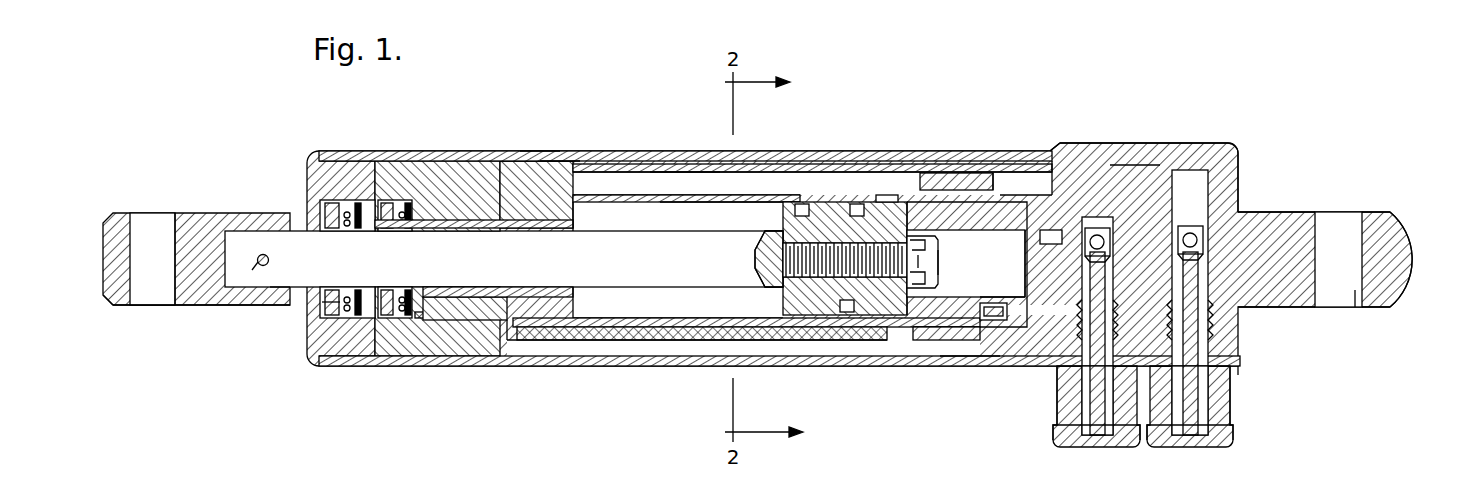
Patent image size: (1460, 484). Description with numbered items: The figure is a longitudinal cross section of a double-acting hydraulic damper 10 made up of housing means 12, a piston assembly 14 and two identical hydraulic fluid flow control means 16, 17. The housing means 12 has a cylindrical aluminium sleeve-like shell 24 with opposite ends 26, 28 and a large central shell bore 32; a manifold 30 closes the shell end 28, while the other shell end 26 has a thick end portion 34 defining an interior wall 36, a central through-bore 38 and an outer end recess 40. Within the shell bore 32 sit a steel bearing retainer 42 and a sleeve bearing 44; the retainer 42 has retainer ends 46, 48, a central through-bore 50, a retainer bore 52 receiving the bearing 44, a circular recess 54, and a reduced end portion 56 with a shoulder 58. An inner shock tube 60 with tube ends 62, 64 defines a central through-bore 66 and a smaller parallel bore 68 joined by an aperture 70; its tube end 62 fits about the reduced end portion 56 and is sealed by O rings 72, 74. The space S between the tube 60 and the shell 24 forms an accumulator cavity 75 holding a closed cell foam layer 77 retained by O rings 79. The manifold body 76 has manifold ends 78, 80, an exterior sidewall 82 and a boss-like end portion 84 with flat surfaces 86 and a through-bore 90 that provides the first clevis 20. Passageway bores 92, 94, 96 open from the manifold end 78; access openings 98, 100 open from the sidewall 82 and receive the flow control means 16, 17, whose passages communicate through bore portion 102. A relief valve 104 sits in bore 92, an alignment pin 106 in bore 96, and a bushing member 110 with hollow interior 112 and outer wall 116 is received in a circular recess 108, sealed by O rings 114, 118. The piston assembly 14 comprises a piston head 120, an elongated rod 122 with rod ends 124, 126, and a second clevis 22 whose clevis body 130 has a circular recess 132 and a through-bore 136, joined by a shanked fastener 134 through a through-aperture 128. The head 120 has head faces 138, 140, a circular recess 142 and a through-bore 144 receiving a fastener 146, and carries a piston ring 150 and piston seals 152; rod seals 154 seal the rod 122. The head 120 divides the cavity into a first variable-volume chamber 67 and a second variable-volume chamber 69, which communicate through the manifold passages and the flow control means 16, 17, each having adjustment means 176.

The hydraulic damper 10 is at (1189, 96).
The housing means 12 is at (645, 140).
The piston assembly 14 is at (247, 190).
The hydraulic fluid flow control means 16 is at (1035, 440).
The hydraulic fluid flow control means 17 is at (1250, 450).
The first clevis 20 is at (1385, 212).
The second clevis 22 is at (118, 213).
The sleeve-like shell 24 is at (555, 152).
The shell end 26 is at (306, 184).
The shell end 28 is at (1060, 150).
The manifold 30 is at (1145, 132).
The shell bore 32 is at (590, 166).
The thick end portion 34 is at (352, 150).
The interior wall 36 is at (408, 161).
The central through-bore 38 is at (365, 287).
The outer end recess 40 is at (318, 314).
The bearing retainer 42 is at (420, 356).
The sleeve bearing 44 is at (525, 287).
The retainer end 46 is at (356, 356).
The retainer end 48 is at (578, 304).
The central through-bore 50 is at (428, 287).
The retainer bore 52 is at (483, 297).
The circular recess 54 is at (420, 319).
The reduced end portion 56 is at (540, 152).
The shoulder 58 is at (505, 162).
The shock tube 60 is at (677, 172).
The tube end 62 is at (495, 190).
The tube end 64 is at (972, 175).
The central through-bore 66 is at (702, 203).
The first variable-volume chamber 67 is at (584, 225).
The parallel bore 68 is at (698, 172).
The second variable-volume chamber 69 is at (968, 268).
The aperture 70 is at (617, 205).
The O ring 72 is at (510, 340).
The O ring 74 is at (552, 222).
The accumulator cavity 75 is at (775, 356).
The manifold body 76 is at (1208, 143).
The closed cell foam layer 77 is at (697, 343).
The manifold end 78 is at (970, 366).
The O ring 79 is at (553, 340).
The manifold end 80 is at (1240, 170).
The exterior sidewall 82 is at (1240, 370).
The boss-like end portion 84 is at (1410, 255).
The flat surface 86 is at (1290, 212).
The through-bore 90 is at (1355, 307).
The passageway bore 92 is at (1046, 312).
The passageway bore 94 is at (1053, 230).
The passageway bore 96 is at (1118, 160).
The access opening 98 is at (1057, 385).
The access opening 100 is at (1232, 385).
The bore portion 102 is at (1143, 300).
The relief valve 104 is at (985, 330).
The alignment pin 106 is at (930, 173).
The circular recess 108 is at (1003, 230).
The bushing member 110 is at (978, 297).
The hollow interior 112 is at (972, 230).
The O ring 114 is at (1010, 175).
The outer wall 116 is at (938, 262).
The O ring 118 is at (917, 328).
The piston head 120 is at (783, 303).
The elongated rod 122 is at (640, 289).
The rod end 124 is at (210, 255).
The rod end 126 is at (878, 175).
The through-aperture 128 is at (272, 259).
The clevis body 130 is at (185, 306).
The circular recess 132 is at (278, 287).
The shanked fastener 134 is at (258, 266).
The through-bore 136 is at (133, 305).
The head face 138 is at (783, 220).
The head face 140 is at (897, 204).
The circular recess 142 is at (763, 238).
The through-bore 144 is at (848, 320).
The fastener 146 is at (940, 272).
The piston ring 150 is at (800, 204).
The piston seal 152 is at (857, 204).
The rod seal 154 is at (320, 199).
The adjustment means 176 is at (1085, 448).
The space S is at (630, 343).